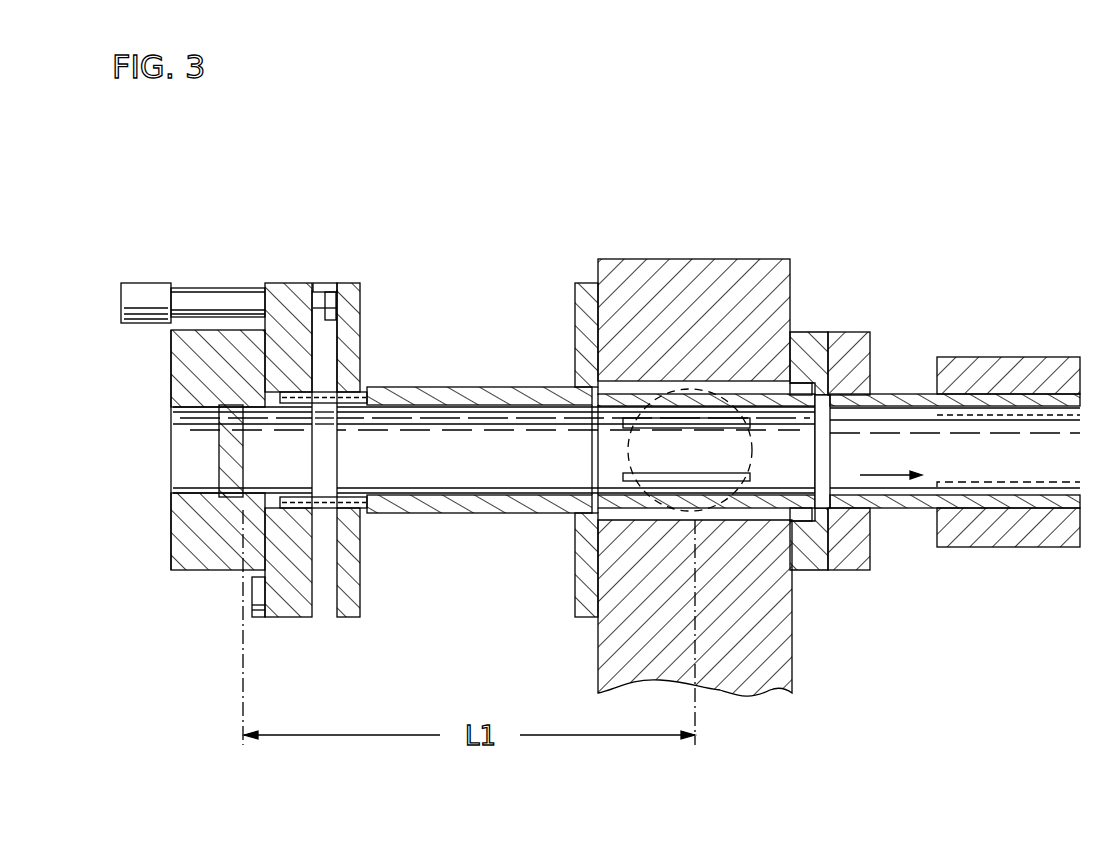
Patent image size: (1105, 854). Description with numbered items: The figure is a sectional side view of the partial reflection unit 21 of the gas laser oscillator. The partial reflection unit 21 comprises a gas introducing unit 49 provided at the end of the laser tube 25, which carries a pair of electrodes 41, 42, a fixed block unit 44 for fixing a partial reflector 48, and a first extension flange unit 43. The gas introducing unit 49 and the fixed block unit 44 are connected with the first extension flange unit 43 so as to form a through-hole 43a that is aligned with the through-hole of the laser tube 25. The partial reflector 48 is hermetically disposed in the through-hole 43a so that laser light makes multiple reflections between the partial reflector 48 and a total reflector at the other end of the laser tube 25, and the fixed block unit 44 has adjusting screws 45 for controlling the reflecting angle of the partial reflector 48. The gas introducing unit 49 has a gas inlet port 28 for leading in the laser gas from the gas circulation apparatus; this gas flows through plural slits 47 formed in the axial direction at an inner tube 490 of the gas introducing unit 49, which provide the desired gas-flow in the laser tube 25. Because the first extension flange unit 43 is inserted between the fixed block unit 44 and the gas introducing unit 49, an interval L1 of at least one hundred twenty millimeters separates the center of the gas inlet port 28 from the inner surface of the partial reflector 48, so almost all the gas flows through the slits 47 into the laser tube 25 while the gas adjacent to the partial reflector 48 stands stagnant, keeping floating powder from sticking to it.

The partial reflection unit 21 is at (540, 244).
The laser tube 25 is at (918, 397).
The gas inlet port 28 is at (710, 513).
The electrode 41 is at (1040, 365).
The electrode 42 is at (1025, 540).
The first extension flange unit 43 is at (440, 392).
The through-hole 43a is at (440, 497).
The fixed block unit 44 is at (292, 285).
The adjusting screw 45 is at (148, 290).
The slit 47 is at (825, 523).
The partial reflector 48 is at (225, 453).
The gas introducing unit 49 is at (692, 259).
The inner tube 490 is at (830, 395).